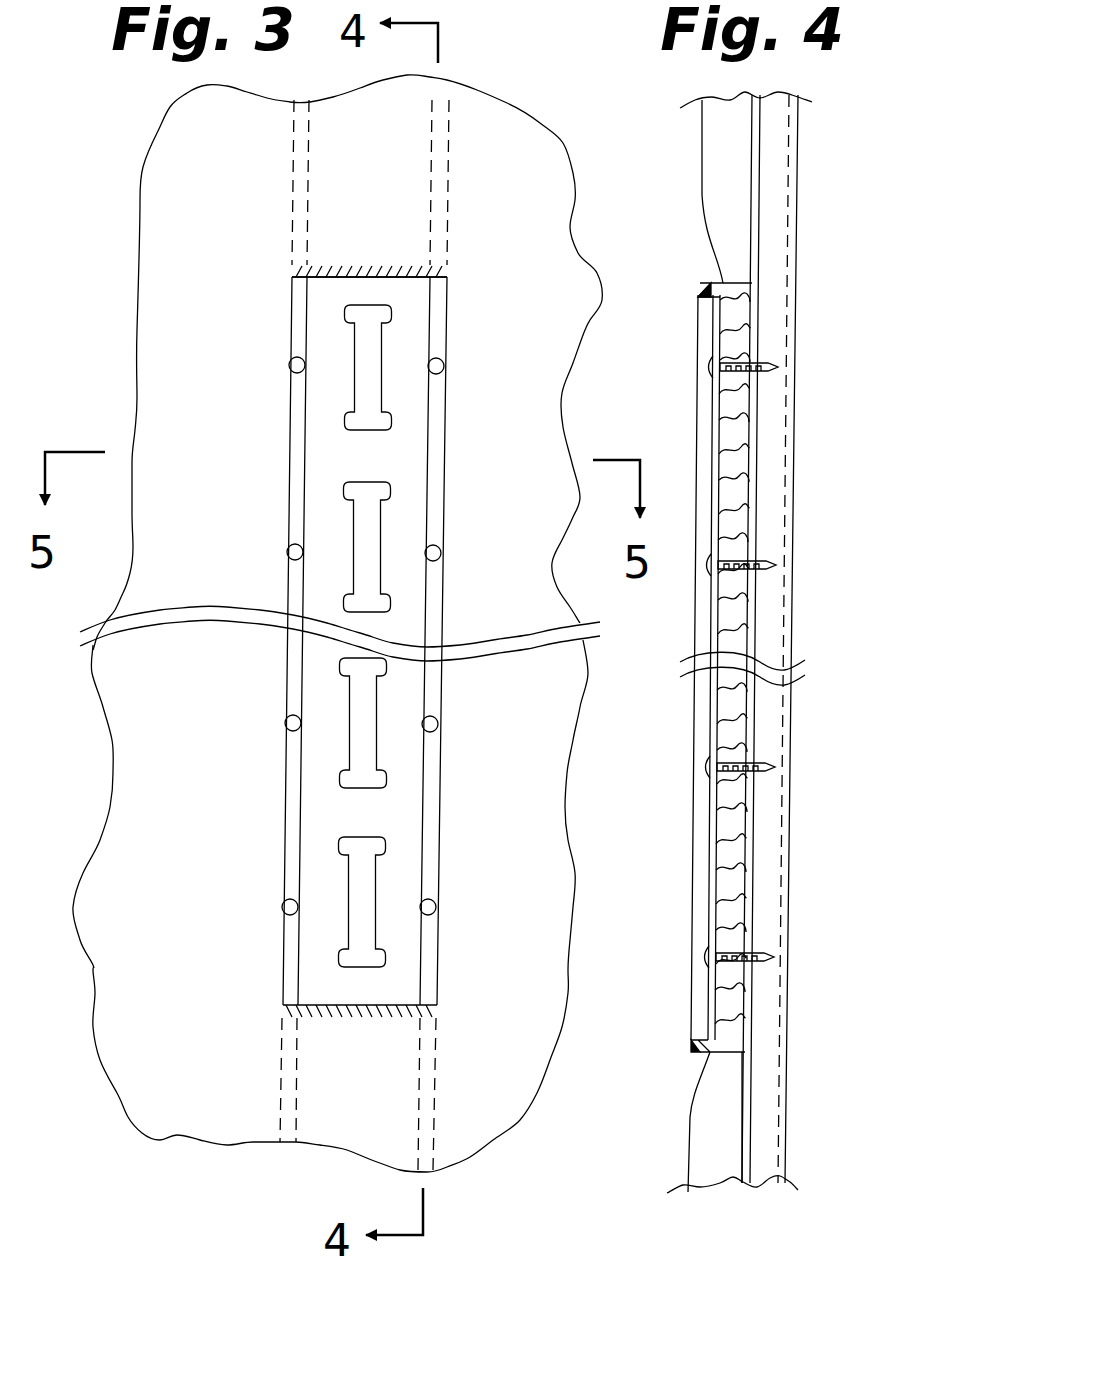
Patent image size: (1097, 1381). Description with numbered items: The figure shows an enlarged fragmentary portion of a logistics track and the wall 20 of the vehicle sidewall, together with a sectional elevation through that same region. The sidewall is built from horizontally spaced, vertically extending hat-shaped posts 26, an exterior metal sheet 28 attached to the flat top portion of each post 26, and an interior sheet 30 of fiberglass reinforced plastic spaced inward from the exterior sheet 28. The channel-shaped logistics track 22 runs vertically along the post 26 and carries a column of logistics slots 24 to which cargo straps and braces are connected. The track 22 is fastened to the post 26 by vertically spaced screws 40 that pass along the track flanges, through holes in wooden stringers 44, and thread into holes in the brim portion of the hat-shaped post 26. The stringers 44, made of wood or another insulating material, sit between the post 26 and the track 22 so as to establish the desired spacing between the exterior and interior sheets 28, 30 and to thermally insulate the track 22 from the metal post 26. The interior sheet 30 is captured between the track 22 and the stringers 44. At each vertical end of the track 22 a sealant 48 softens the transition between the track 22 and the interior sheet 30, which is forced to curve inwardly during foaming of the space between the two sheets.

In FIG. 3, the door panel 20 is at (165, 290).
In FIG. 3, the logistics track 22 is at (320, 685).
In FIG. 4, the logistics track 22 is at (698, 330).
In FIG. 3, the logistics slots 24 is at (350, 753).
In FIG. 3, the post 26 is at (283, 1122).
In FIG. 4, the post 26 is at (743, 1097).
In FIG. 4, the exterior sheet 28 is at (802, 218).
In FIG. 4, the interior sheet 30 is at (698, 136).
In FIG. 3, the screws 40 is at (288, 551).
In FIG. 4, the screws 40 is at (700, 957).
In FIG. 4, the stringers 44 is at (722, 858).
In FIG. 3, the sealant 48 is at (378, 265).
In FIG. 4, the sealant 48 is at (709, 280).